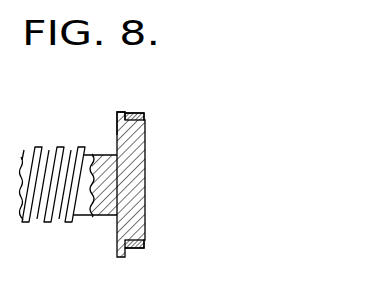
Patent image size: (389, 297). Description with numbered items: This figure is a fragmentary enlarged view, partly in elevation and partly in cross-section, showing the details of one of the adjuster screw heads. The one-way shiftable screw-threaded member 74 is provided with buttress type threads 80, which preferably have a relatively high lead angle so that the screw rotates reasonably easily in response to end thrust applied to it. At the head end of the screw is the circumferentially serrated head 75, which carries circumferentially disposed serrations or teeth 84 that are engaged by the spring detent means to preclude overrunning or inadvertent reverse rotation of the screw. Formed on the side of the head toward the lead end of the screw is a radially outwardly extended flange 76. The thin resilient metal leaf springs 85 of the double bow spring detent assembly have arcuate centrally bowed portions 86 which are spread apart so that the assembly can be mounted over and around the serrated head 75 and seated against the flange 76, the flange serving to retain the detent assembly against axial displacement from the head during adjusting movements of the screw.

The screw-threaded member 74 is at (46, 150).
The buttress type threads 80 is at (36, 219).
The circumferentially serrated head 75 is at (138, 172).
The radially outwardly extended flange 76 is at (117, 111).
The resilient metal leaf springs 85 is at (145, 117).
The serrations or teeth 84 is at (145, 241).
The arcuate centrally bowed portions 86 is at (133, 113).